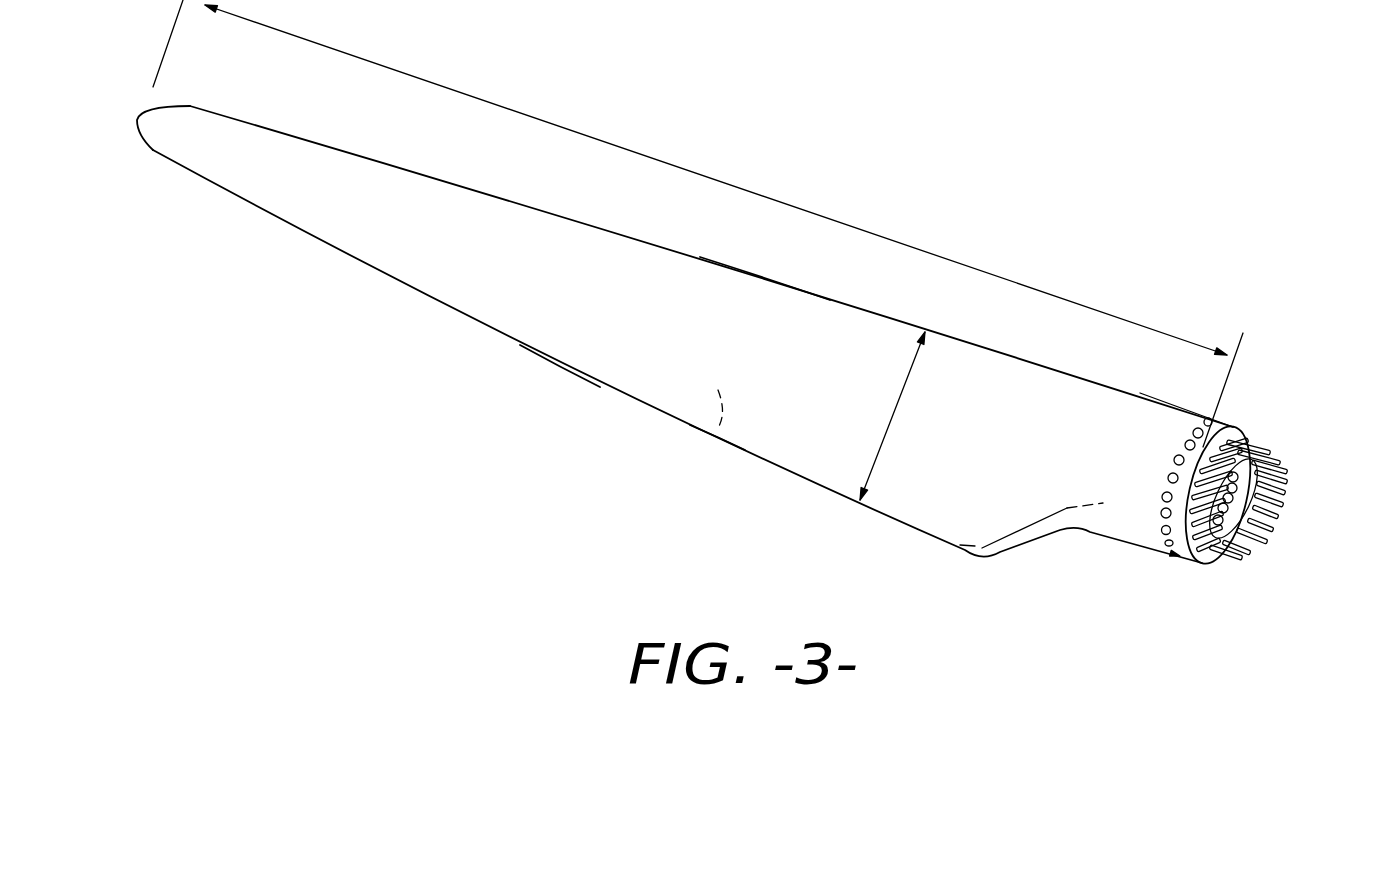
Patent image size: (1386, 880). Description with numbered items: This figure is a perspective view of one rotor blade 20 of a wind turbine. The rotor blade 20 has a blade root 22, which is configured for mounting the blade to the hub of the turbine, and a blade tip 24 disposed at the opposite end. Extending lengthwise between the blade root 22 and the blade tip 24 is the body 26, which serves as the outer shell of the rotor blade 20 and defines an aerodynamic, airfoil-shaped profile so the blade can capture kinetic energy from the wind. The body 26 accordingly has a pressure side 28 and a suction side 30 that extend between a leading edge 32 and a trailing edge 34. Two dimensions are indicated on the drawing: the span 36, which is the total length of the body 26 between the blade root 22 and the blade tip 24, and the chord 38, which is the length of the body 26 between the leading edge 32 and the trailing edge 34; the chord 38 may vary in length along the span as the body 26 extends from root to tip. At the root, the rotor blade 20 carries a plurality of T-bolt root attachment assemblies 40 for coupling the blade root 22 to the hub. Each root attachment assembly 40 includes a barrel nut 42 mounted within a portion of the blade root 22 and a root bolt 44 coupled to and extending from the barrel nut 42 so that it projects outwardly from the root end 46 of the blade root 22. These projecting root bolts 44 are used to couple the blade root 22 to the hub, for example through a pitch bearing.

The rotor blade 20 is at (1102, 200).
The blade root 22 is at (1152, 540).
The blade tip 24 is at (140, 117).
The body 26 is at (557, 250).
The pressure side 28 is at (718, 437).
The suction side 30 is at (447, 270).
The leading edge 32 is at (763, 280).
The trailing edge 34 is at (560, 367).
The span 36 is at (745, 188).
The chord 38 is at (888, 425).
The root attachment assembly 40 is at (1152, 493).
The barrel nut 42 is at (1283, 462).
The root bolt 44 is at (1193, 433).
The root end 46 is at (1210, 567).